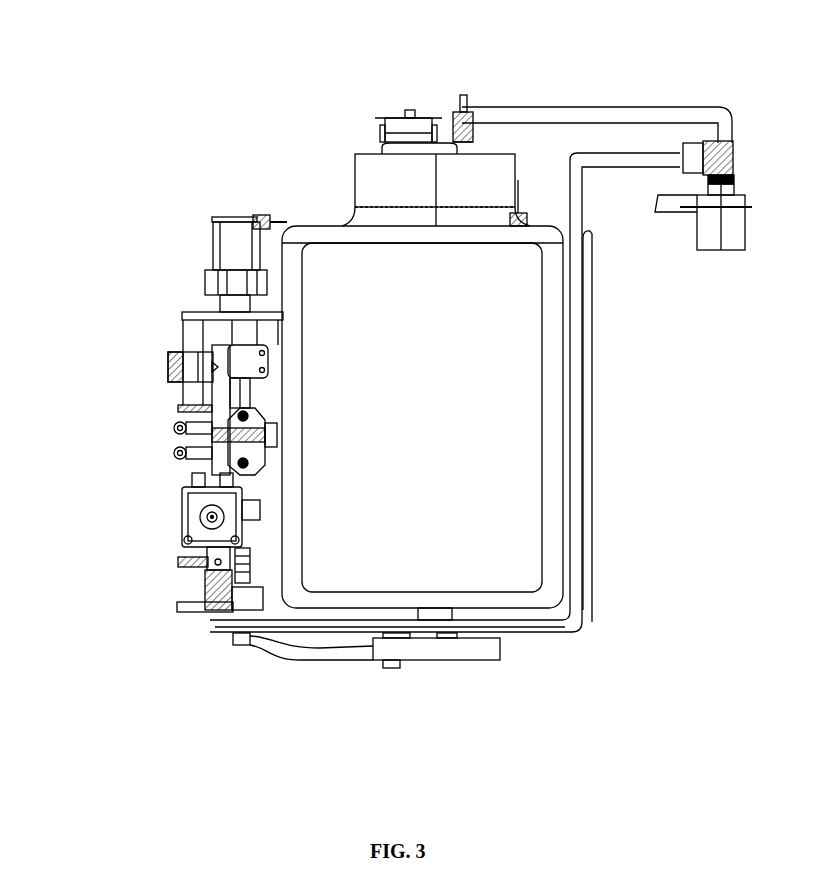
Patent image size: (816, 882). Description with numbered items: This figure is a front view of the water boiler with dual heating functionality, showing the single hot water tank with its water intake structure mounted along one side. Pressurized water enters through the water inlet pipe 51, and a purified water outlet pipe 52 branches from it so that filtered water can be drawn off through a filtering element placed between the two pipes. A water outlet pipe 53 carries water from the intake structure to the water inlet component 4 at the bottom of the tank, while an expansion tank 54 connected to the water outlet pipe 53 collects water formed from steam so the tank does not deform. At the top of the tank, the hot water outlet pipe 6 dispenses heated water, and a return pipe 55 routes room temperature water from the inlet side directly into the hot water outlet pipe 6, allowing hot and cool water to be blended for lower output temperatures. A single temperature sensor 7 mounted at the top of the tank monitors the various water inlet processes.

The water inlet component 4 is at (423, 650).
The hot water outlet pipe 6 is at (527, 112).
The temperature sensor 7 is at (405, 128).
The water inlet pipe 51 is at (167, 360).
The purified water outlet pipe 52 is at (208, 597).
The water outlet pipe 53 is at (327, 652).
The expansion tank 54 is at (183, 320).
The return pipe 55 is at (577, 550).